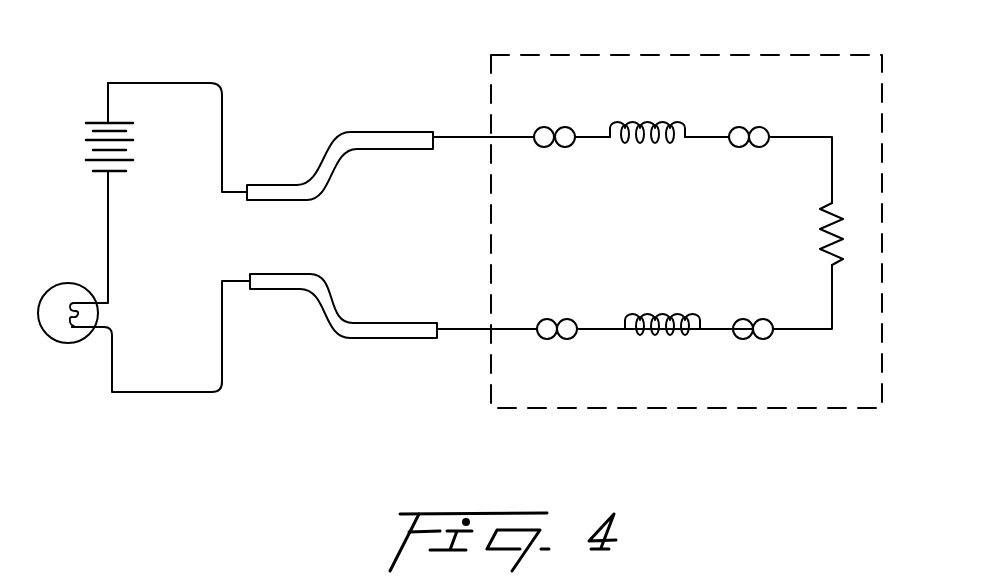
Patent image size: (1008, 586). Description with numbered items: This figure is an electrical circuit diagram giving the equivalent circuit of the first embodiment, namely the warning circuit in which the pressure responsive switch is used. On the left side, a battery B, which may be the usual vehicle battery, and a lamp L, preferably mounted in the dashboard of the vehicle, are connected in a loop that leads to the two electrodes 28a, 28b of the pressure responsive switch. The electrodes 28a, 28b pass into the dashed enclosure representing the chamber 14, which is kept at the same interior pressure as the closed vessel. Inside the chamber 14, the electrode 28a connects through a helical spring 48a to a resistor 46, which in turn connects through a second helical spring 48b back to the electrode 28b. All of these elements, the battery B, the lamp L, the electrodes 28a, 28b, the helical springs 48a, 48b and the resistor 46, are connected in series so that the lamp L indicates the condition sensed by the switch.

The battery B is at (90, 135).
The lamp L is at (65, 337).
The electrode 28a is at (373, 139).
The electrode 28b is at (385, 328).
The chamber 14 is at (596, 55).
The helical spring 48a is at (664, 124).
The helical spring 48b is at (665, 336).
The resistor 46 is at (825, 231).